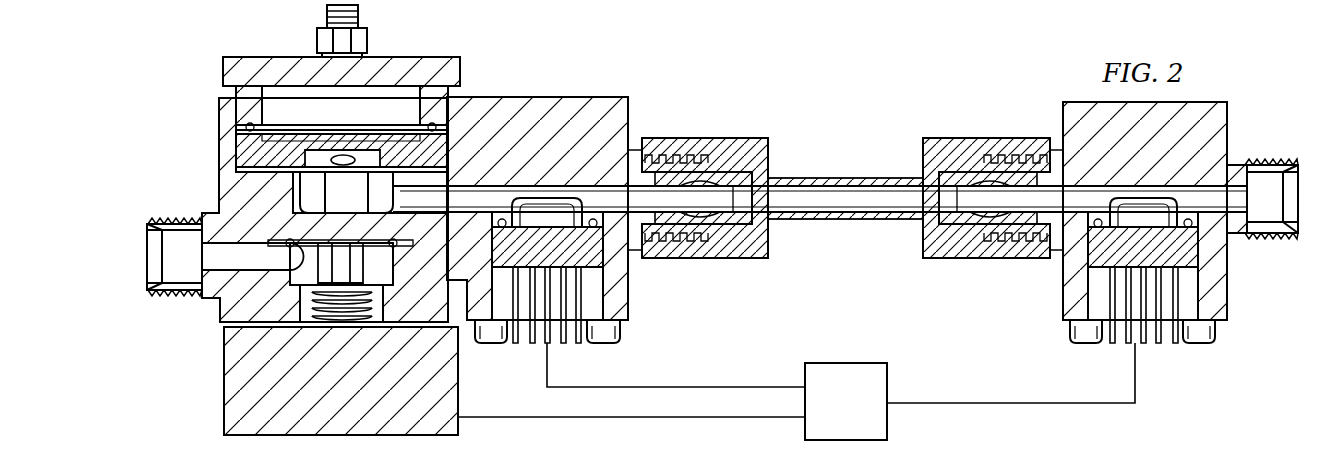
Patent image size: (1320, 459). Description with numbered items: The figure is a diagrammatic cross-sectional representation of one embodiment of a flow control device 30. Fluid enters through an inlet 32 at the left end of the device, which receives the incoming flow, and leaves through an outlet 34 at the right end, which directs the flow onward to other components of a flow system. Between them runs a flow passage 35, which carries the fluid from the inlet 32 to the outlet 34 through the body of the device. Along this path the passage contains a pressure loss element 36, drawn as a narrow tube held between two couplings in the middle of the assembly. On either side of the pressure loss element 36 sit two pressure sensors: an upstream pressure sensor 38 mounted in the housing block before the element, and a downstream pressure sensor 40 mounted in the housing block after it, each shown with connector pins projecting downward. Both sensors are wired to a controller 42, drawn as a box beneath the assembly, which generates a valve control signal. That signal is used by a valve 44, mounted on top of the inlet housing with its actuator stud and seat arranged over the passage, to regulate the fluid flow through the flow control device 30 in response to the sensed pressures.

The flow control device 30 is at (702, 58).
The inlet 32 is at (176, 207).
The outlet 34 is at (1266, 150).
The flow passage 35 is at (207, 262).
The pressure loss element 36 is at (851, 180).
The upstream pressure sensor 38 is at (521, 353).
The downstream pressure sensor 40 is at (1171, 353).
The controller 42 is at (833, 416).
The valve 44 is at (272, 63).